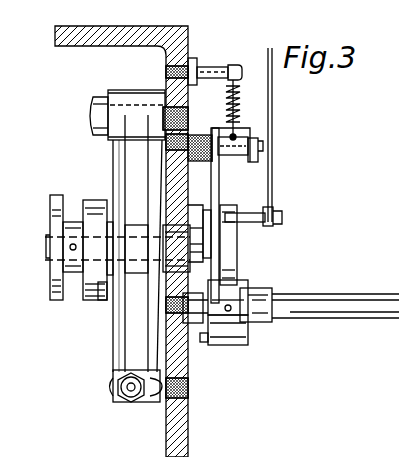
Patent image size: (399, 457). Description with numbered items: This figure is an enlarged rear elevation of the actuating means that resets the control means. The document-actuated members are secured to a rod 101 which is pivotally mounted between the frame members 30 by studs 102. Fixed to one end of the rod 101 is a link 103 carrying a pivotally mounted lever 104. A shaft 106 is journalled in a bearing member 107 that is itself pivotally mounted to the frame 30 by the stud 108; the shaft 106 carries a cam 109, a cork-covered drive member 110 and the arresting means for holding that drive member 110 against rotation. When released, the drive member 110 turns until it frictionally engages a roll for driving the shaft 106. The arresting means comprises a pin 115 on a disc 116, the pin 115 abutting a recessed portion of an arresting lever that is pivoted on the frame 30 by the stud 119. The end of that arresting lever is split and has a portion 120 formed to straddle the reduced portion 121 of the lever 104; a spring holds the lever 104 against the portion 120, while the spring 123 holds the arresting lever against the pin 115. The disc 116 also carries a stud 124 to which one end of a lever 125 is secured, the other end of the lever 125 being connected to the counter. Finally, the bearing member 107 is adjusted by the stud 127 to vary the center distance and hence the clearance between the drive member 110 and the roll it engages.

The frame member 30 is at (188, 45).
The rod 101 is at (312, 294).
The stud 102 is at (223, 346).
The link 103 is at (250, 327).
The lever 104 is at (232, 300).
The shaft 106 is at (76, 296).
The bearing member 107 is at (118, 162).
The stud 108 is at (95, 100).
The cam 109 is at (53, 194).
The cork-covered drive member 110 is at (97, 306).
The pin 115 is at (203, 222).
The disc 116 is at (228, 210).
The stud 119 is at (215, 130).
The split end portion 120 is at (237, 262).
The reduced portion 121 is at (222, 232).
The spring 123 is at (241, 105).
The stud 124 is at (283, 213).
The lever 125 is at (273, 160).
The stud 127 is at (140, 403).